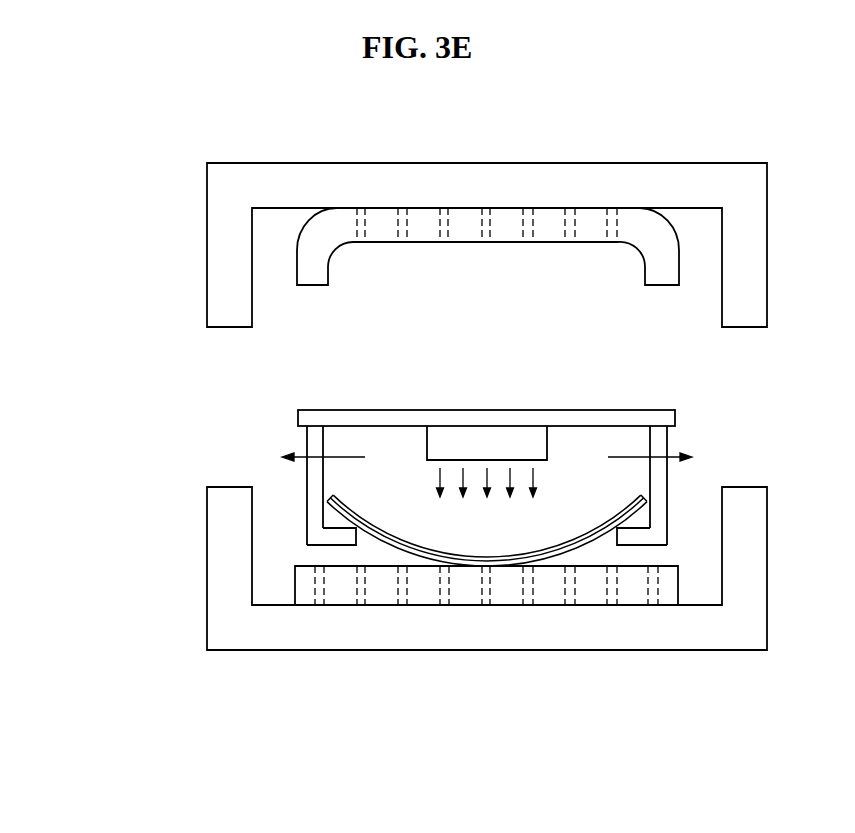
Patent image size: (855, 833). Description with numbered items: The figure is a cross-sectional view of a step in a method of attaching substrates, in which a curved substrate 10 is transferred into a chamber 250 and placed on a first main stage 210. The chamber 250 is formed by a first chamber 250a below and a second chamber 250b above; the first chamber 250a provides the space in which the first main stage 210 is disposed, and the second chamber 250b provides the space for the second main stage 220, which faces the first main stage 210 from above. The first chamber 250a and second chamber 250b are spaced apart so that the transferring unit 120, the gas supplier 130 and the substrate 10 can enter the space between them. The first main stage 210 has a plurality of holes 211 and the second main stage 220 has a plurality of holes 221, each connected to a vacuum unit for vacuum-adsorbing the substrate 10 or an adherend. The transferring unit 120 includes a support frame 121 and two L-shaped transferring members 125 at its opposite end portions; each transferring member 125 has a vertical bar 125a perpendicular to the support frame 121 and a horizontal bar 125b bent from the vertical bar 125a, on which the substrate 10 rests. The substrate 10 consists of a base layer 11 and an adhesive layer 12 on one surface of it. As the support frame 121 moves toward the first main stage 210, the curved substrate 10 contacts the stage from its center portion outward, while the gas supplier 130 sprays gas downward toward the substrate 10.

The substrate 10 is at (727, 440).
The base layer 11 is at (640, 505).
The adhesive layer 12 is at (647, 497).
The transferring unit 120 is at (653, 336).
The support frame 121 is at (580, 417).
The transferring member 125 is at (678, 368).
The vertical bar 125a is at (660, 443).
The horizontal bar 125b is at (630, 540).
The gas supplier 130 is at (486, 445).
The first main stage 210 is at (307, 593).
The holes 211 is at (365, 585).
The second main stage 220 is at (315, 240).
The holes 221 is at (405, 225).
The chamber 250 is at (120, 283).
The first chamber 250a is at (213, 547).
The second chamber 250b is at (213, 278).